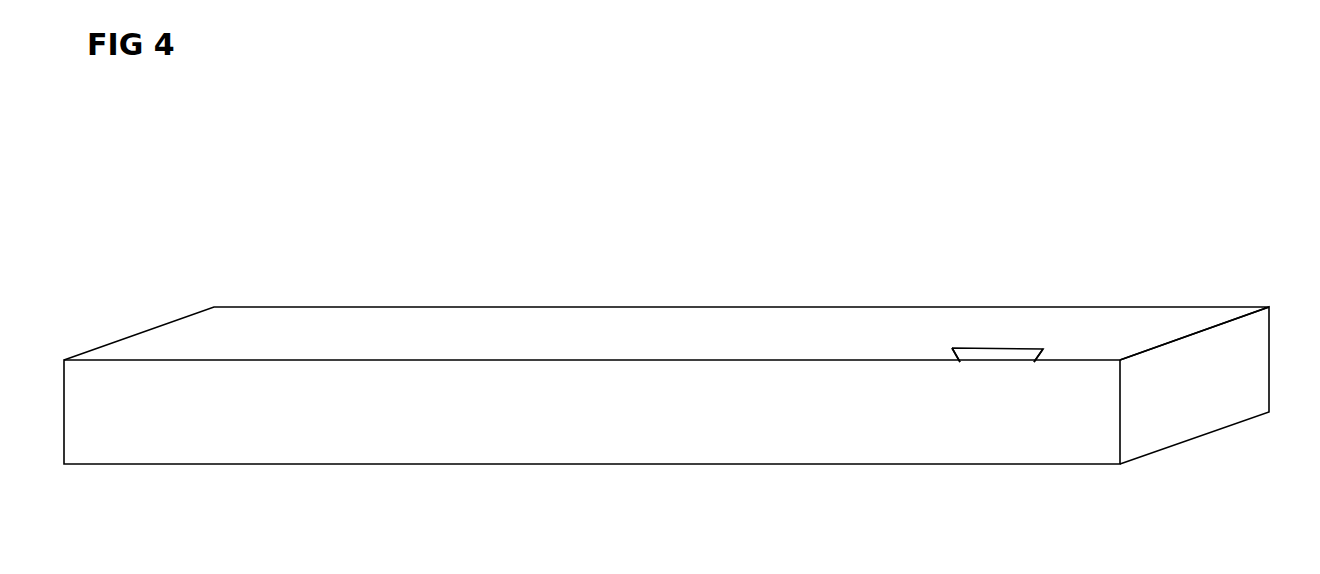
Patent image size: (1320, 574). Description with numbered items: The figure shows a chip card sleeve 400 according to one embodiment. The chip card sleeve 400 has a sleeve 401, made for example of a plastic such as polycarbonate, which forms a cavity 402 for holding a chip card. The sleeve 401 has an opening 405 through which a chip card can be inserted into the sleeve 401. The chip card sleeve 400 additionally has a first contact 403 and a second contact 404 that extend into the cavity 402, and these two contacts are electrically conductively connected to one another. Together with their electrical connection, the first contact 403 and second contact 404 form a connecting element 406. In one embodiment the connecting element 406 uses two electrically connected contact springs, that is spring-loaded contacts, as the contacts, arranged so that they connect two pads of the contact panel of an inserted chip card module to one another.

The chip card sleeve 400 is at (687, 304).
The sleeve 401 is at (757, 307).
The cavity 402 is at (708, 430).
The first contact 403 is at (960, 363).
The second contact 404 is at (1036, 362).
The opening 405 is at (1192, 382).
The connecting element 406 is at (1000, 348).